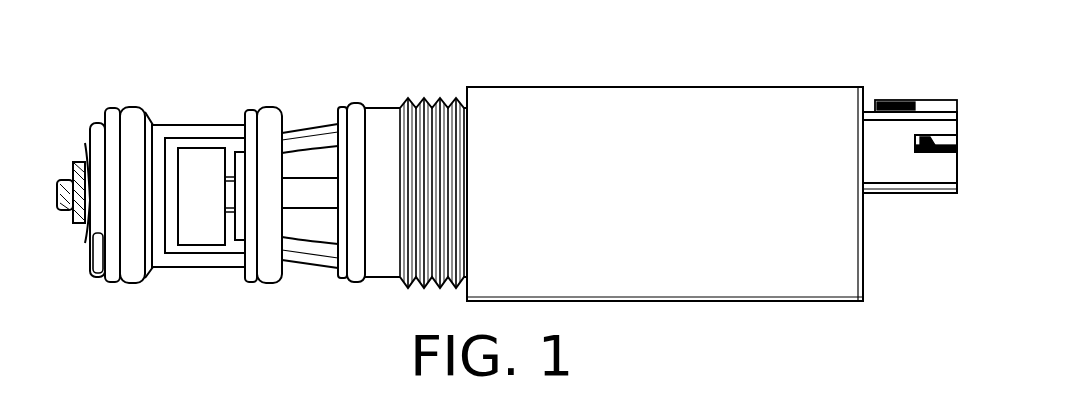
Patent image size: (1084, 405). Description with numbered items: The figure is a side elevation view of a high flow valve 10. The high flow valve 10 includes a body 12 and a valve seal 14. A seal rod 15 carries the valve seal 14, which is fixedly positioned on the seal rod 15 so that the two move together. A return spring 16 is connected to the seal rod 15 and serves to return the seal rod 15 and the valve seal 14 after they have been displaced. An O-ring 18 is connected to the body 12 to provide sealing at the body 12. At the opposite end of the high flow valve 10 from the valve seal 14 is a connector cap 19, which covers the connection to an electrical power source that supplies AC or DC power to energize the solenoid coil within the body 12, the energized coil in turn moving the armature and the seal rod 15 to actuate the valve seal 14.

The high flow valve 10 is at (522, 45).
The body 12 is at (390, 122).
The valve seal 14 is at (205, 236).
The seal rod 15 is at (54, 185).
The return spring 16 is at (95, 125).
The O-ring 18 is at (130, 108).
The connector cap 19 is at (908, 130).